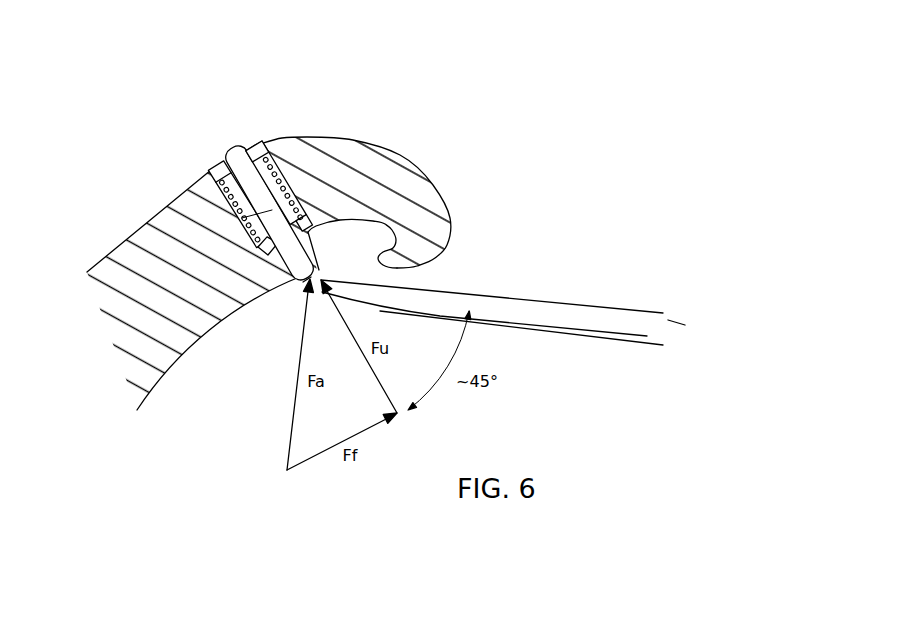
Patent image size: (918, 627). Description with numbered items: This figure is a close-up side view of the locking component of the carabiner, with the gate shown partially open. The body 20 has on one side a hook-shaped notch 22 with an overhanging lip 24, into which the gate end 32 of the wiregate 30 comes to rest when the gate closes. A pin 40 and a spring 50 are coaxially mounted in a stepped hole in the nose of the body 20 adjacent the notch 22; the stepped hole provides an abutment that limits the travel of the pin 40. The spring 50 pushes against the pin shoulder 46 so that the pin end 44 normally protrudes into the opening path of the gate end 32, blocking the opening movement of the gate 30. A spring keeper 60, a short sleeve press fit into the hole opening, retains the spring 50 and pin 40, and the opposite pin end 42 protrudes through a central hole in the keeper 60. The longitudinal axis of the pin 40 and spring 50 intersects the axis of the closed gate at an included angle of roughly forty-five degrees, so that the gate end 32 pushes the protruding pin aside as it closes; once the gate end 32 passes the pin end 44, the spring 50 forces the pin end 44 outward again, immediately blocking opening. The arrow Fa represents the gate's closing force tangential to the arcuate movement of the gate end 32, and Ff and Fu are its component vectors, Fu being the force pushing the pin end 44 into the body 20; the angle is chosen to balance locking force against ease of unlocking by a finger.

The body 20 is at (130, 312).
The hook-shaped notch 22 is at (360, 220).
The overhanging lip 24 is at (388, 265).
The wiregate 30 is at (593, 298).
The gate end 32 is at (318, 296).
The pin 40 is at (240, 219).
The pin end 42 is at (234, 157).
The pin end 44 is at (300, 279).
The pin shoulder 46 is at (262, 251).
The spring 50 is at (277, 217).
The spring keeper 60 is at (253, 145).